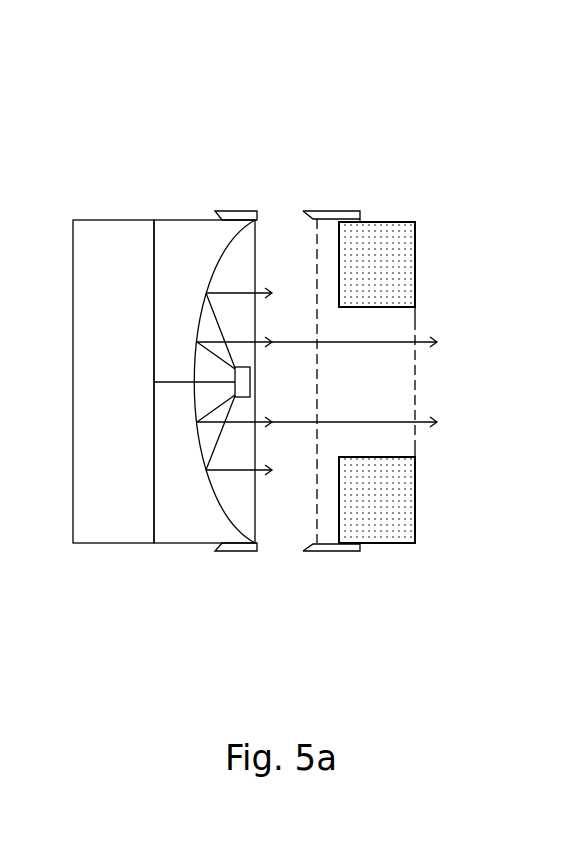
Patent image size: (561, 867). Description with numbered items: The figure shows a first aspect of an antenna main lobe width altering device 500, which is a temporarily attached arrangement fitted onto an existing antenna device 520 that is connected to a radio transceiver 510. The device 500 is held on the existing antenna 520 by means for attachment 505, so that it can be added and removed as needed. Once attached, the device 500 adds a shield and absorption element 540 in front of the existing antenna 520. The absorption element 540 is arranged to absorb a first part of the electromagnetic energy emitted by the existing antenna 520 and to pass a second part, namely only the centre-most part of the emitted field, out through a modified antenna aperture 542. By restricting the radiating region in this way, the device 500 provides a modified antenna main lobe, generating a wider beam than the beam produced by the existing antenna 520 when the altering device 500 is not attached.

The antenna main lobe width altering device 500 is at (456, 137).
The means for attachment 505 is at (320, 200).
The radio transceiver 510 is at (113, 218).
The existing antenna device 520 is at (178, 218).
The absorption element 540 is at (418, 262).
The modified antenna aperture 542 is at (448, 382).